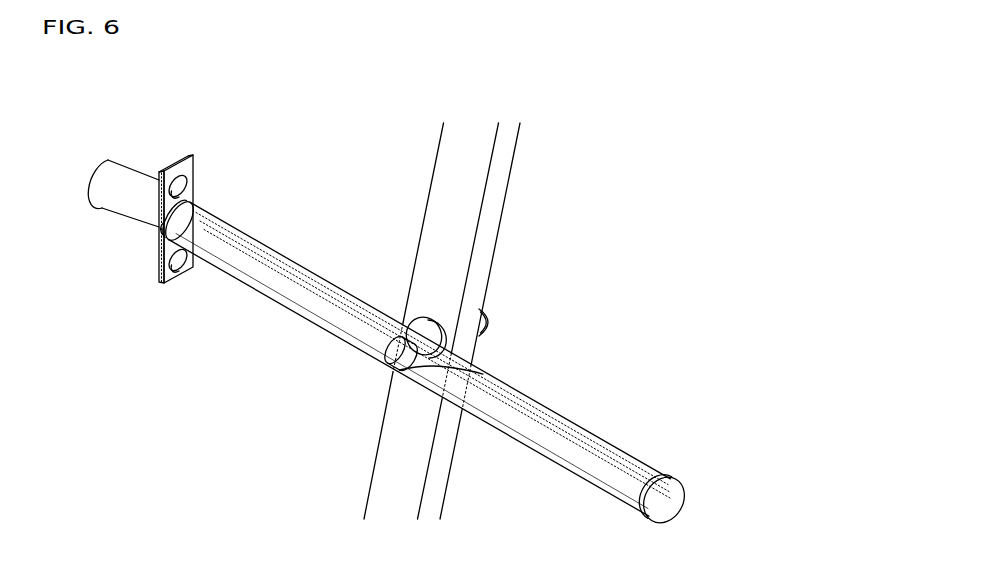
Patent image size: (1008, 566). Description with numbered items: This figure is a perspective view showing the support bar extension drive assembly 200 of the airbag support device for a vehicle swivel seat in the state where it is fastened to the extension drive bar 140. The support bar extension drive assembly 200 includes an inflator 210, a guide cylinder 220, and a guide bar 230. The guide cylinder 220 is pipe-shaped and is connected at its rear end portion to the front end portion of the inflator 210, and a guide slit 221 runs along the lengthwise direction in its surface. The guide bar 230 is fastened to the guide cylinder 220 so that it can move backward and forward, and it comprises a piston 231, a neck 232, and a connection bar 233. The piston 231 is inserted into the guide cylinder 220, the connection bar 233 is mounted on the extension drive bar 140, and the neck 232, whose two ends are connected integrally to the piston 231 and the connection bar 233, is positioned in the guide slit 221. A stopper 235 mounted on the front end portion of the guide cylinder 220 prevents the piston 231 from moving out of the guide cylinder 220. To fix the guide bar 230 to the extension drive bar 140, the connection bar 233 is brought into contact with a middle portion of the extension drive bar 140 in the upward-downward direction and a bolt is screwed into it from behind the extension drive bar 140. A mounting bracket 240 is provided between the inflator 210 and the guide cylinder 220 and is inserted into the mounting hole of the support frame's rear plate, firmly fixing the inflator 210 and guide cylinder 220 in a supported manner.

The extension drive bar 140 is at (473, 192).
The support bar extension drive assembly 200 is at (241, 202).
The inflator 210 is at (118, 170).
The guide cylinder 220 is at (464, 363).
The guide slit 221 is at (320, 290).
The guide bar 230 is at (583, 252).
The piston 231 is at (483, 374).
The neck 232 is at (443, 356).
The connection bar 233 is at (483, 315).
The stopper 235 is at (672, 500).
The mounting bracket 240 is at (158, 257).